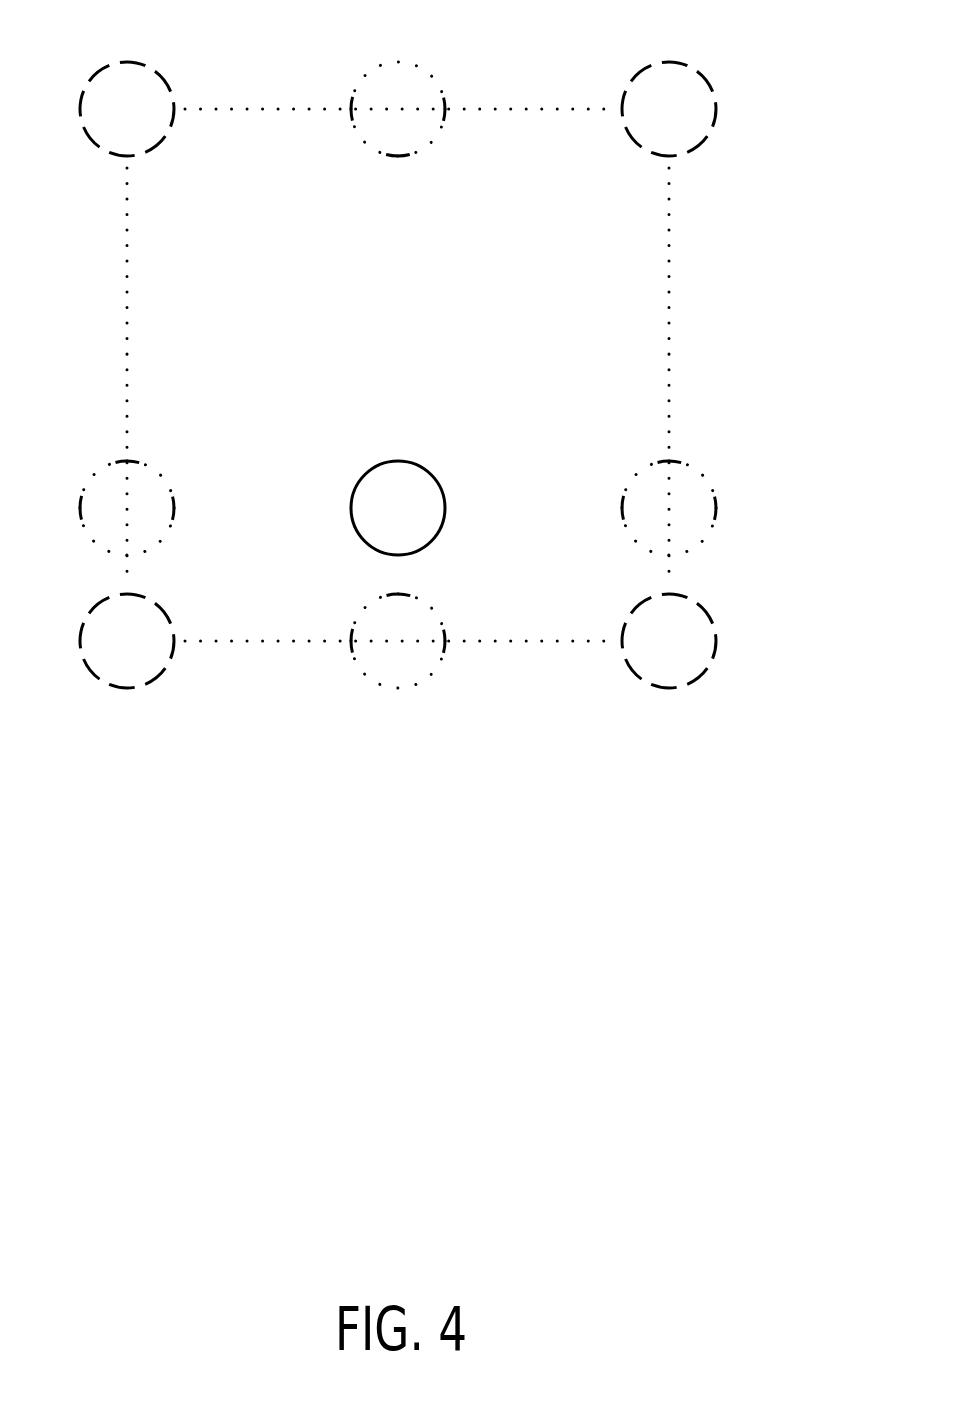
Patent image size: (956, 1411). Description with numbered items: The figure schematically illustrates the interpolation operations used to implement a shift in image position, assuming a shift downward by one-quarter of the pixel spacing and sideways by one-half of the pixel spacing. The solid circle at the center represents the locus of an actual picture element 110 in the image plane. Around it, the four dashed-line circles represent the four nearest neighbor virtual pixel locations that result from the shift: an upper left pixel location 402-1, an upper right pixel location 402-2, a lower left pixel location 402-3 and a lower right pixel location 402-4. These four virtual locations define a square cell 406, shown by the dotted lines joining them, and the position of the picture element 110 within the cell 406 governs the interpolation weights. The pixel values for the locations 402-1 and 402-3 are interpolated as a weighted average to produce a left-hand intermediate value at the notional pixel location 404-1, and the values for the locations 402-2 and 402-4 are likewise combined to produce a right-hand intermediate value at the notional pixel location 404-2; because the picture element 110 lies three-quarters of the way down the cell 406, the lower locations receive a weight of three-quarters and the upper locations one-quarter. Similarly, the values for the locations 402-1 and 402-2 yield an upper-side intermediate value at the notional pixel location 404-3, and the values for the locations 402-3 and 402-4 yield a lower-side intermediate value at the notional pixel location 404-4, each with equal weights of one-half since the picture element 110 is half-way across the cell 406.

The upper left pixel location 402-1 is at (142, 67).
The upper right pixel location 402-2 is at (670, 65).
The lower left pixel location 402-3 is at (148, 682).
The lower right pixel location 402-4 is at (662, 687).
The notional pixel location (left-hand intermediate) 404-1 is at (138, 552).
The notional pixel location (right-hand intermediate) 404-2 is at (678, 552).
The notional pixel location (upper-side intermediate) 404-3 is at (395, 65).
The notional pixel location (lower-side intermediate) 404-4 is at (407, 685).
The cell 406 is at (670, 318).
The picture element 110 is at (420, 547).